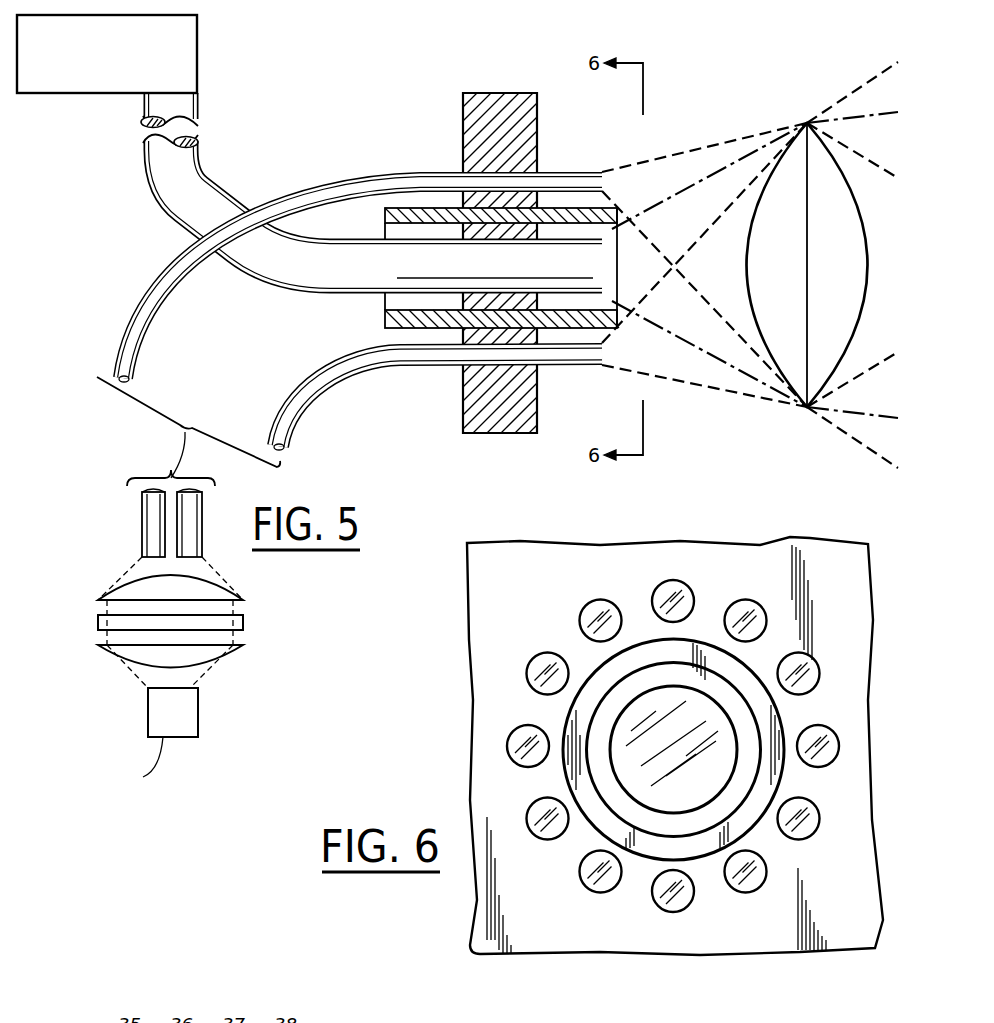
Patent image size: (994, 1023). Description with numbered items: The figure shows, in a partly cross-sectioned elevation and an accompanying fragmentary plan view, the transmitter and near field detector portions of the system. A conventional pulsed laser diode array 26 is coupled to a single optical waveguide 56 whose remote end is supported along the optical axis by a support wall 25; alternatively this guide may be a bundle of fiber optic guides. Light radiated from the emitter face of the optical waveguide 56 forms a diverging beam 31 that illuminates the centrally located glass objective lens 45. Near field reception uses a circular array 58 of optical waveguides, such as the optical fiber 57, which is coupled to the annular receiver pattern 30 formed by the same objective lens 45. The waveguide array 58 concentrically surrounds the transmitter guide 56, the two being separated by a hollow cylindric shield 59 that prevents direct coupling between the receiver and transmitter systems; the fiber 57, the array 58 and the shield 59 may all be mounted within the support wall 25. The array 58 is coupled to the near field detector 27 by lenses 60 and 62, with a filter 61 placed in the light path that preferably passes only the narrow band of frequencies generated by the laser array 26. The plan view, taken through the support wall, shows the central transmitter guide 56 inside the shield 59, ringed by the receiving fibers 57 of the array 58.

In FIG. 5, the support wall 25 is at (537, 133).
In FIG. 5, the laser diode array 26 is at (197, 64).
In FIG. 5, the near field detector 27 is at (198, 716).
In FIG. 5, the annular receiver pattern 30 is at (716, 150).
In FIG. 5, the diverging beam 31 is at (688, 196).
In FIG. 5, the glass objective lens 45 is at (867, 240).
In FIG. 5, the optical waveguide 56 is at (213, 181).
In FIG. 6, the optical waveguide 56 is at (652, 812).
In FIG. 5, the optical fiber 57 is at (362, 176).
In FIG. 6, the optical fiber 57 is at (748, 601).
In FIG. 5, the circular array of optical waveguides 58 is at (150, 461).
In FIG. 6, the circular array of optical waveguides 58 is at (828, 662).
In FIG. 5, the hollow cylindric shield 59 is at (385, 318).
In FIG. 6, the hollow cylindric shield 59 is at (779, 775).
In FIG. 5, the lens 60 is at (98, 600).
In FIG. 5, the filter 61 is at (98, 623).
In FIG. 5, the lens 62 is at (98, 650).